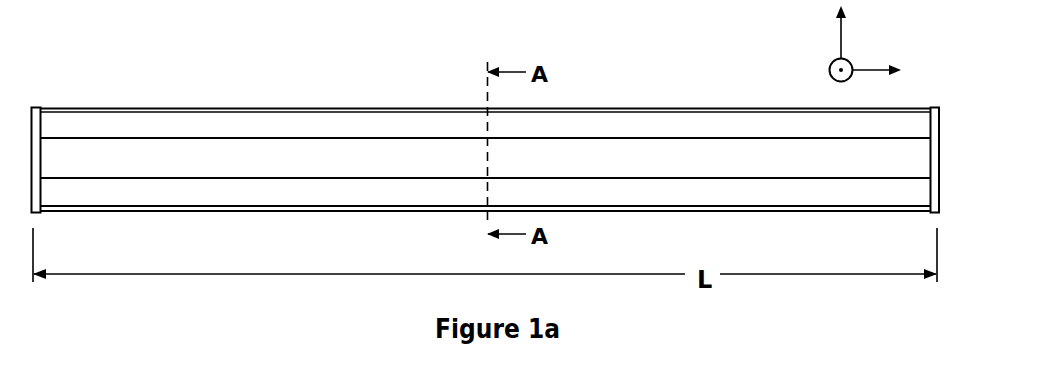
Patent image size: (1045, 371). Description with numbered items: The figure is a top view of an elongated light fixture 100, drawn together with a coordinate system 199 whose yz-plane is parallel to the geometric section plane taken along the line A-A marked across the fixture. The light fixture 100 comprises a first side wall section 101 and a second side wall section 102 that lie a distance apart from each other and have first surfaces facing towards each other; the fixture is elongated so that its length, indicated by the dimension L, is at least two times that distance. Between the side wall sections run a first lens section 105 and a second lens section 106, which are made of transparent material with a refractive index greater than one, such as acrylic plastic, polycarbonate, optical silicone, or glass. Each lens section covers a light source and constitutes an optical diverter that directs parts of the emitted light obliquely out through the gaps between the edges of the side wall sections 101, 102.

The light fixture 100 is at (146, 56).
The first side wall section 101 is at (398, 212).
The second side wall section 102 is at (724, 107).
The first lens section 105 is at (244, 192).
The second lens section 106 is at (380, 122).
The coordinate system 199 is at (900, 44).